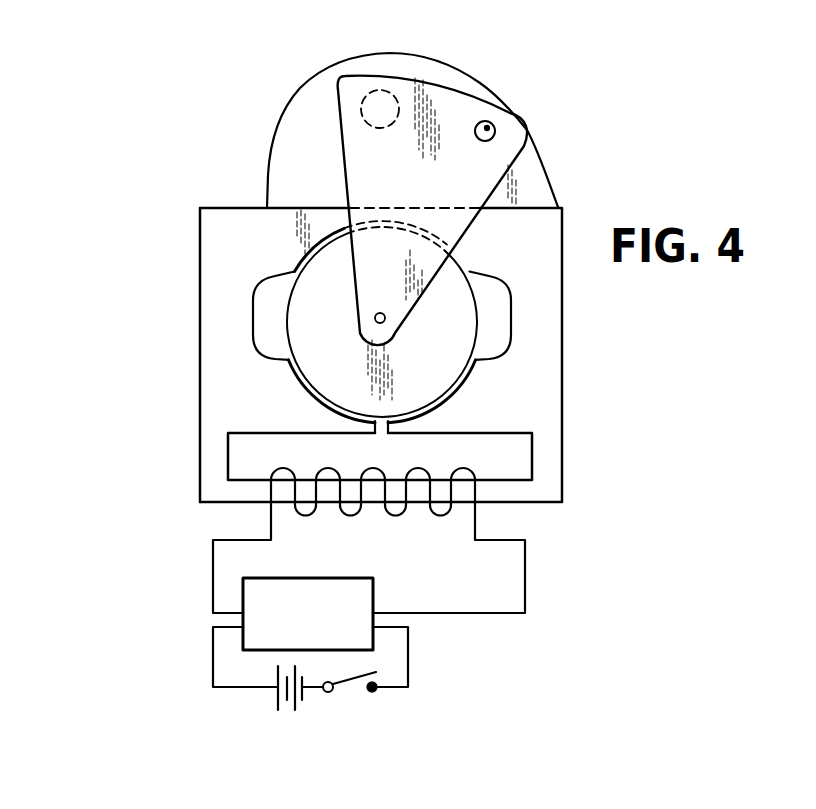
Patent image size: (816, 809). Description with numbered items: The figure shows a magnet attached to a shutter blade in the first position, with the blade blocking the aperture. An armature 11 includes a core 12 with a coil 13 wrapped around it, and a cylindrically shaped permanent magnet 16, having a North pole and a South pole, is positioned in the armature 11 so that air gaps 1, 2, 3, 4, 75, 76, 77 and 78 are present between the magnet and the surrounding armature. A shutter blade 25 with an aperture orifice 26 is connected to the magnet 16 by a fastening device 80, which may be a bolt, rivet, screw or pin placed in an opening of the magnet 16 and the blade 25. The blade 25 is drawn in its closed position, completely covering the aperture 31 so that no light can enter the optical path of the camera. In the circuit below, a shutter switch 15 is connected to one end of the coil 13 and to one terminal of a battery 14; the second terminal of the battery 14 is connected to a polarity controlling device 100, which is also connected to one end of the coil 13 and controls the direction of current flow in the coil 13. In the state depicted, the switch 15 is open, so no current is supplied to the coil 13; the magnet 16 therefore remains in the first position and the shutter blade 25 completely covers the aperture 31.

The air gap 1 is at (313, 240).
The air gap 2 is at (428, 228).
The air gap 3 is at (452, 392).
The air gap 4 is at (310, 392).
The armature 11 is at (205, 318).
The core 12 is at (210, 252).
The coil 13 is at (393, 516).
The battery 14 is at (287, 703).
The switch 15 is at (356, 684).
The permanent magnet 16 is at (442, 293).
The shutter blade 25 is at (428, 77).
The aperture orifice 26 is at (488, 127).
The aperture 31 is at (370, 92).
The air gap 75 is at (383, 222).
The air gap 76 is at (376, 436).
The air gap 77 is at (266, 323).
The air gap 78 is at (490, 327).
The fastening device 80 is at (381, 313).
The polarity controlling device 100 is at (242, 620).